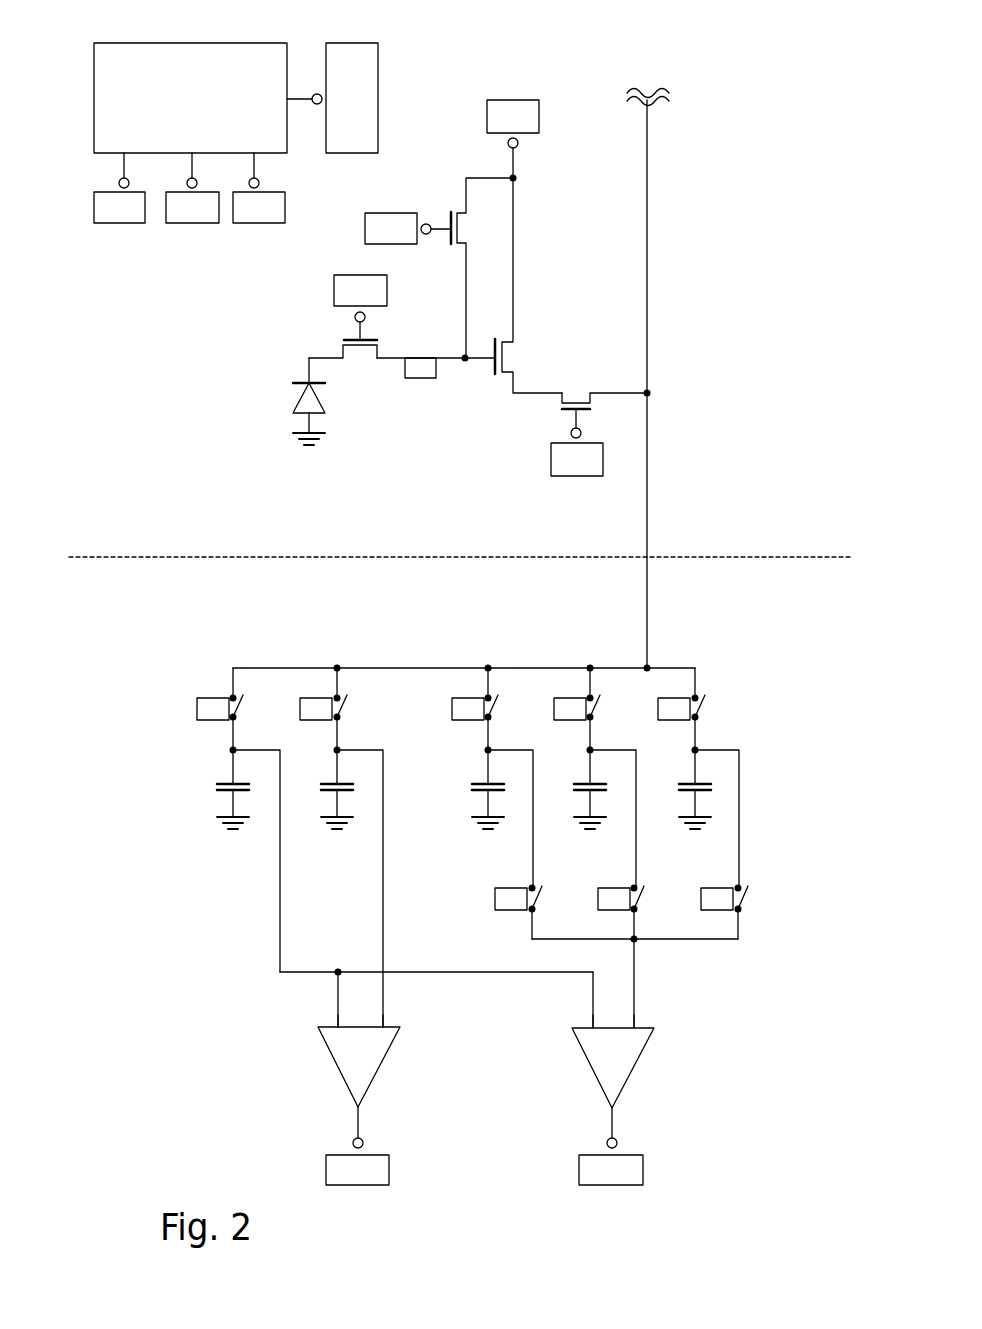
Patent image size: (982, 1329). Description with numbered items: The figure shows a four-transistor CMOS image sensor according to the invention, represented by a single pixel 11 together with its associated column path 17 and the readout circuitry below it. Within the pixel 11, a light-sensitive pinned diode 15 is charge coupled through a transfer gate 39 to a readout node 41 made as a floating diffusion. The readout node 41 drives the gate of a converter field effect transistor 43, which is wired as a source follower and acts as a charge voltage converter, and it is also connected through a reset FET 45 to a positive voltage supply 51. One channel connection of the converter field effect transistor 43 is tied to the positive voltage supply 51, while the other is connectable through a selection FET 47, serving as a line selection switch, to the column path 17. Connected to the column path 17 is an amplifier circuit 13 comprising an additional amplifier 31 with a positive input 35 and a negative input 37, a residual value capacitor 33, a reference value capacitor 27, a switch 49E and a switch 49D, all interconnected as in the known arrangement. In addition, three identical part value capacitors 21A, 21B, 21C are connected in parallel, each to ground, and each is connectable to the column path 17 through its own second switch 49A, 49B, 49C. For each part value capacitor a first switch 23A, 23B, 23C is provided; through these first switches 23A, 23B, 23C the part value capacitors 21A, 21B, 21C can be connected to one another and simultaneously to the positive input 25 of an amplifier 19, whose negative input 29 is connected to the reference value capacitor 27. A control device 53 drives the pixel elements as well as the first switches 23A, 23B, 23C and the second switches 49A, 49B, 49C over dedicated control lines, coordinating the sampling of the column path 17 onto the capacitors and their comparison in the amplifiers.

The pixel 11 is at (268, 337).
The amplifier circuit 13 is at (157, 1050).
The pinned diode 15 is at (300, 410).
The column path 17 is at (647, 160).
The amplifier 19 is at (640, 1058).
The part value capacitor 21A is at (702, 786).
The part value capacitor 21B is at (576, 786).
The part value capacitor 21C is at (475, 789).
The first switch 23A is at (748, 896).
The first switch 23B is at (645, 898).
The first switch 23C is at (543, 898).
The positive input 25 is at (649, 1019).
The reference value capacitor 27 is at (218, 785).
The negative input 29 is at (579, 1021).
The additional amplifier 31 is at (380, 1065).
The residual value capacitor 33 is at (320, 792).
The positive input 35 is at (393, 1019).
The negative input 37 is at (326, 1020).
The transfer gate 39 is at (345, 341).
The readout node 41 is at (405, 370).
The converter field effect transistor 43 is at (522, 345).
The reset FET 45 is at (453, 200).
The selection FET 47 is at (578, 386).
The second switch 49A is at (703, 712).
The second switch 49B is at (600, 705).
The second switch 49C is at (498, 705).
The switch 49D is at (348, 700).
The switch 49E is at (243, 705).
The positive voltage supply 51 is at (512, 100).
The control device 53 is at (152, 48).